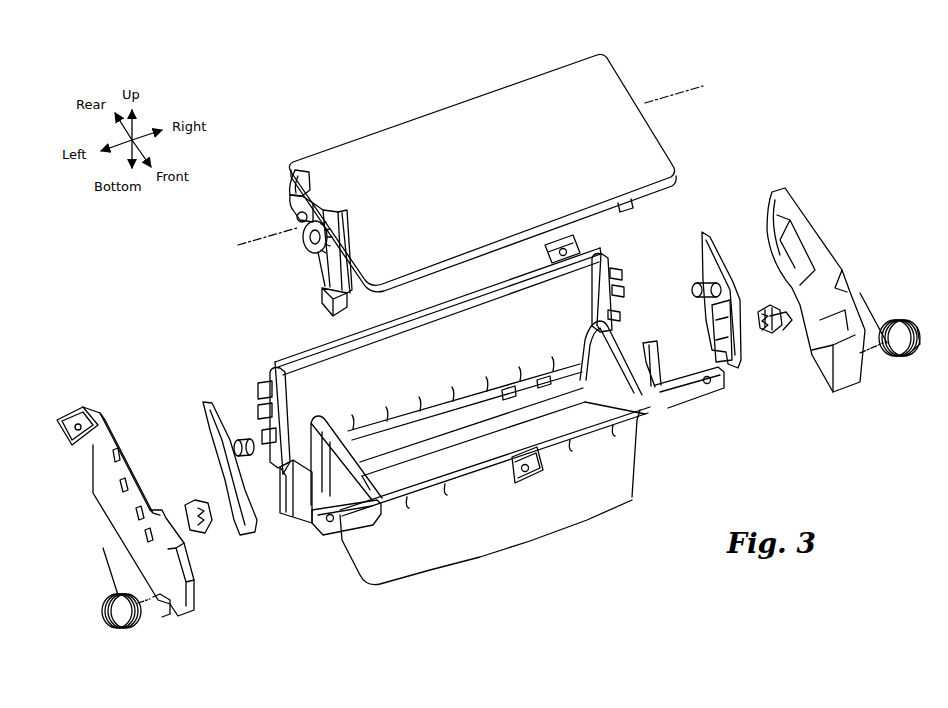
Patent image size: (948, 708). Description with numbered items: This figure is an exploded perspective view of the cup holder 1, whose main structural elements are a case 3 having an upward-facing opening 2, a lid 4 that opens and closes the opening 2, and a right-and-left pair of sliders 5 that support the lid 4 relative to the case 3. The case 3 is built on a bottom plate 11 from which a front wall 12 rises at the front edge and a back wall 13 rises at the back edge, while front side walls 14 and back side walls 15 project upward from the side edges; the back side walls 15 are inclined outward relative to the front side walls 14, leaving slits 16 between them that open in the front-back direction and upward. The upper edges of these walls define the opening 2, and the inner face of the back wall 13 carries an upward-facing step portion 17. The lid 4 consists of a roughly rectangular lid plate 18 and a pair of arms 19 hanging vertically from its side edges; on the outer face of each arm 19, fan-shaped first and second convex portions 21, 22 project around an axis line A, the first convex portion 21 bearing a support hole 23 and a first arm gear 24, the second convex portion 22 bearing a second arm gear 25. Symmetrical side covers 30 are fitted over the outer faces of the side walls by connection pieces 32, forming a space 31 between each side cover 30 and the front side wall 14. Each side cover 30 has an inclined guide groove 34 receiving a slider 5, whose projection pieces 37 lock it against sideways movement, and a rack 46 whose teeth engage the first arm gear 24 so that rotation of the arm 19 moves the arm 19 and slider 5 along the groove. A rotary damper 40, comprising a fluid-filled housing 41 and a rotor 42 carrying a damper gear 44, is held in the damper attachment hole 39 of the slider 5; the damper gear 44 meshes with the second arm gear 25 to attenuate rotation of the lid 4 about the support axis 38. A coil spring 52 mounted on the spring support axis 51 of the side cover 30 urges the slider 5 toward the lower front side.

The cup holder 1 is at (692, 80).
The opening 2 is at (409, 377).
The case 3 is at (585, 527).
The lid 4 is at (405, 112).
The slider 5 is at (202, 395).
The bottom plate 11 is at (445, 465).
The front wall 12 is at (525, 530).
The back wall 13 is at (452, 318).
The front side wall 14 is at (363, 548).
The back side wall 15 is at (270, 376).
The slit 16 is at (298, 431).
The step portion 17 is at (403, 430).
The lid plate 18 is at (513, 96).
The arm 19 is at (347, 282).
The first convex portion 21 is at (297, 203).
The second convex portion 22 is at (315, 266).
The support hole 23 is at (296, 221).
The first arm gear 24 is at (301, 235).
The second arm gear 25 is at (297, 187).
The side cover 30 is at (112, 430).
The space 31 is at (303, 496).
The connection piece 32 is at (262, 392).
The guide groove 34 is at (793, 280).
The projection piece 37 is at (207, 418).
The support axis 38 is at (245, 440).
The damper attachment hole 39 is at (710, 342).
The rotary damper 40 is at (200, 540).
The housing 41 is at (190, 505).
The rotor 42 is at (200, 505).
The damper gear 44 is at (210, 525).
The rack 46 is at (820, 300).
The spring support axis 51 is at (160, 603).
The coil spring 52 is at (105, 617).
The axis line A is at (262, 242).